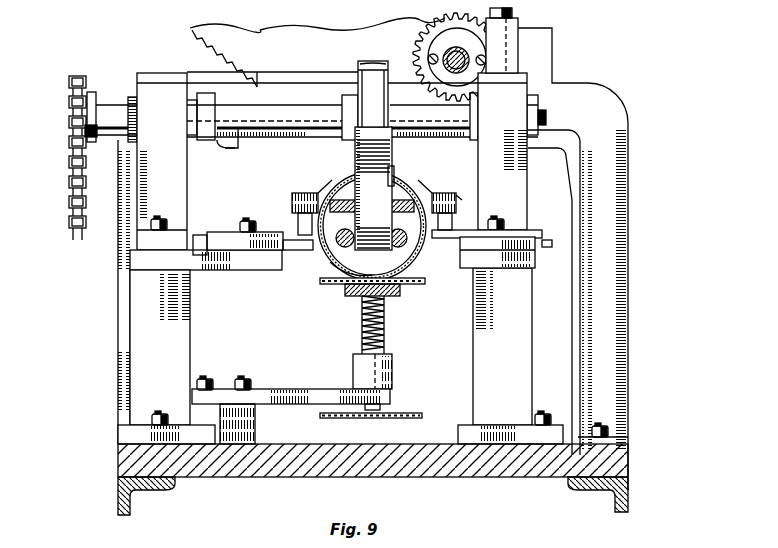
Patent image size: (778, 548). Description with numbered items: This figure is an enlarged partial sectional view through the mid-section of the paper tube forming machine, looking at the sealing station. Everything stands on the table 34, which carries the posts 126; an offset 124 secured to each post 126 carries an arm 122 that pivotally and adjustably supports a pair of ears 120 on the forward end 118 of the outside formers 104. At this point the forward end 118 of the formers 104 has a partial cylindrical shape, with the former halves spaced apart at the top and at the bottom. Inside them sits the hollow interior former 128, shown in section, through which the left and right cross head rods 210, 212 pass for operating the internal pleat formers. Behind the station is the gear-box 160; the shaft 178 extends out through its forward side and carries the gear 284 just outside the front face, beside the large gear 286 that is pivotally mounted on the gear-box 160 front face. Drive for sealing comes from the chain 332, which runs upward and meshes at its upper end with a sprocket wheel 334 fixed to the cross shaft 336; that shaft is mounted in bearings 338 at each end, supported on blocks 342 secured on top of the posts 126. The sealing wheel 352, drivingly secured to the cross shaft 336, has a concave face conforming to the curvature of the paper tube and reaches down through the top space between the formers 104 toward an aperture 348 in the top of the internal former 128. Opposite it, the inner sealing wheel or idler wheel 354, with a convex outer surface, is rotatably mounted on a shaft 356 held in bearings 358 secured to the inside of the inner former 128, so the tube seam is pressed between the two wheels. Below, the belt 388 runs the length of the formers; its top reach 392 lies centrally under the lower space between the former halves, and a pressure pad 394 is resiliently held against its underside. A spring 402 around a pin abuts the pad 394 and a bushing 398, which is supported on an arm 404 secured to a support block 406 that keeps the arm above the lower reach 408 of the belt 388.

The table 34 is at (125, 458).
The outside formers 104 is at (340, 178).
The forward end 118 is at (319, 263).
The ears 120 is at (292, 200).
The arm 122 is at (220, 232).
The offset 124 is at (205, 265).
The post 126 is at (128, 368).
The interior former 128 is at (340, 270).
The gear-box 160 is at (548, 58).
The shaft 178 is at (452, 68).
The cross head rod 210 is at (386, 244).
The cross head rod 212 is at (322, 236).
The gear 284 is at (452, 22).
The large gear 286 is at (250, 26).
The chain 332 is at (72, 222).
The sprocket wheel 334 is at (92, 92).
The cross shaft 336 is at (108, 112).
The bearings 338 is at (128, 136).
The blocks 342 is at (145, 228).
The aperture 348 is at (393, 176).
The sealing wheel 352 is at (368, 80).
The inner sealing wheel 354 is at (356, 172).
The shaft 356 is at (410, 242).
The bearings 358 is at (422, 190).
The belt 388 is at (419, 404).
The top reach 392 is at (412, 276).
The pressure pad 394 is at (352, 290).
The bushing 398 is at (392, 366).
The spring 402 is at (360, 345).
The arm 404 is at (255, 395).
The support block 406 is at (255, 422).
The lower reach 408 is at (370, 415).